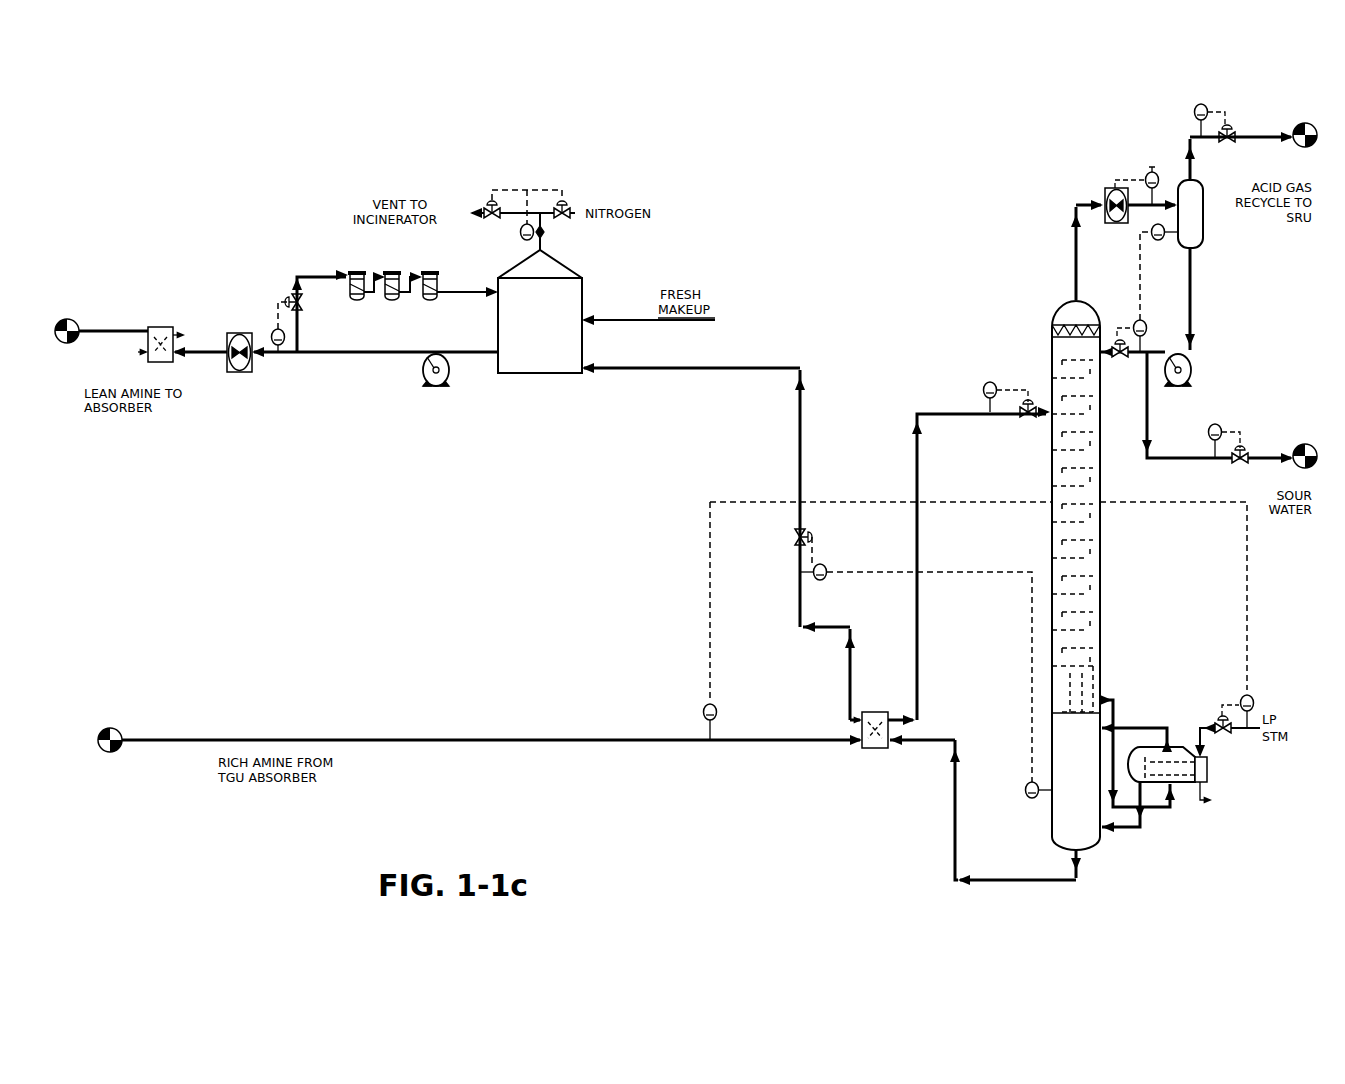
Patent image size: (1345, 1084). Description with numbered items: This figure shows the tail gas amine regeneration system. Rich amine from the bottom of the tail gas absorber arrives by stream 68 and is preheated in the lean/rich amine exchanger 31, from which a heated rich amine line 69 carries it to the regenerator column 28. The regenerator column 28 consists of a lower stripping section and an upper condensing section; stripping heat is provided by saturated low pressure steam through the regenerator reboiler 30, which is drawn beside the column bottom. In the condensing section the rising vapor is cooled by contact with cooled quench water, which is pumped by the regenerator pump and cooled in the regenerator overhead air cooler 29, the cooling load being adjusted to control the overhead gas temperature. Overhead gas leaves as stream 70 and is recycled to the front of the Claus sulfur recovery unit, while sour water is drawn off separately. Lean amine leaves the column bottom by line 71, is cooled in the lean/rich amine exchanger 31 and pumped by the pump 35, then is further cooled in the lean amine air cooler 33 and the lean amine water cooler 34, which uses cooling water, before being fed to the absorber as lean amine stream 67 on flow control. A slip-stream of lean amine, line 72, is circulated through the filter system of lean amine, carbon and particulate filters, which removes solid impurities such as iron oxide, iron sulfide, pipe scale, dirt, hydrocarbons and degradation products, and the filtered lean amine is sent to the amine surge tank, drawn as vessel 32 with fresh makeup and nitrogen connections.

The regenerator column 28 is at (1042, 295).
The regenerator overhead air cooler 29 is at (1091, 180).
The regenerator reboiler 30 is at (1186, 742).
The lean/rich amine exchanger 31 is at (885, 705).
The amine storage tank 32 is at (596, 279).
The lean amine air cooler 33 is at (241, 328).
The lean amine water cooler 34 is at (165, 320).
The pump 35 is at (433, 344).
The lean amine line to absorber 67 is at (107, 322).
The stream 68 is at (465, 727).
The heated rich amine line to regenerator 69 is at (947, 402).
The overhead gas stream 70 is at (1267, 125).
The lean amine line from regenerator bottom 71 is at (1009, 872).
The lean amine line to storage tank 72 is at (750, 364).